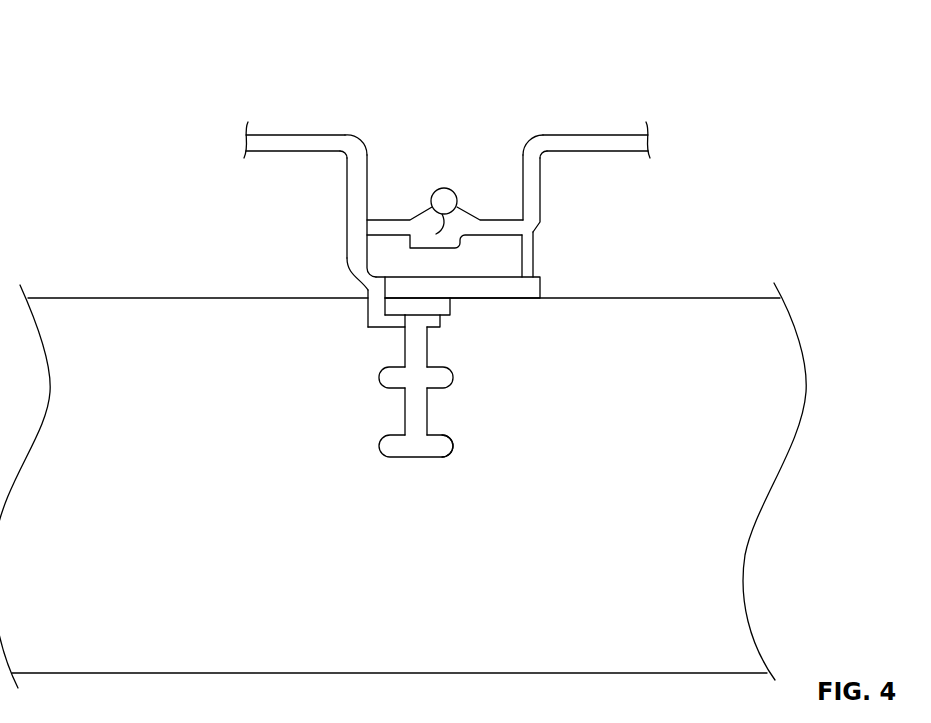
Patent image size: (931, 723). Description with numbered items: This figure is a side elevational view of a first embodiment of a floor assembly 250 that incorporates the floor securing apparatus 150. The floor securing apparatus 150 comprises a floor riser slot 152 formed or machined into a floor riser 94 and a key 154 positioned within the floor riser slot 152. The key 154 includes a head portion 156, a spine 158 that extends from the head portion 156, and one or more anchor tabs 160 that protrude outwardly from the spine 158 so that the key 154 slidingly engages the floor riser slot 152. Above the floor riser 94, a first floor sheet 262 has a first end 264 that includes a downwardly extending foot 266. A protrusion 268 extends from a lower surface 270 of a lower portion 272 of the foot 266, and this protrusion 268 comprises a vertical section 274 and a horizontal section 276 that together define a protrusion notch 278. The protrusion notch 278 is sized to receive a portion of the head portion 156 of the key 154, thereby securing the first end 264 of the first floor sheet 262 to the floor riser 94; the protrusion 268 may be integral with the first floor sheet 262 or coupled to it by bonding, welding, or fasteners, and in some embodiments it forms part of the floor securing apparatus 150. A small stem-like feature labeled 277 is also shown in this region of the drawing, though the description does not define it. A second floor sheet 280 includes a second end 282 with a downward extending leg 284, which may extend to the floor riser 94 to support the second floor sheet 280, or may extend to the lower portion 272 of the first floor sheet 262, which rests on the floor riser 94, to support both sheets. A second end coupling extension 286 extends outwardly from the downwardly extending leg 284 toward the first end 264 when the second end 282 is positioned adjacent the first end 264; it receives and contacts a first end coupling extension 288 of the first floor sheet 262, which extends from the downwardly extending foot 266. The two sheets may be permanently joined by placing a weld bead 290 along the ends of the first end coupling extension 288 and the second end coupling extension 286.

The floor riser 94 is at (710, 297).
The floor securing apparatus 150 is at (407, 421).
The floor riser slot 152 is at (370, 392).
The key 154 is at (420, 458).
The head portion 156 is at (445, 329).
The spine 158 is at (430, 413).
The anchor tabs 160 is at (452, 446).
The floor assembly 250 is at (448, 80).
The first floor sheet 262 is at (270, 143).
The first end 264 is at (349, 135).
The downwardly extending foot 266 is at (347, 176).
The protrusion 268 is at (369, 327).
The lower surface 270 is at (520, 300).
The lower portion 272 is at (542, 288).
The vertical section 274 is at (367, 303).
The horizontal section 276 is at (396, 329).
The stem 277 is at (368, 317).
The protrusion notch 278 is at (398, 307).
The second floor sheet 280 is at (607, 143).
The second end 282 is at (537, 136).
The downwardly extending leg 284 is at (541, 178).
The second end coupling extension 286 is at (508, 219).
The first end coupling extension 288 is at (384, 219).
The weld bead 290 is at (444, 188).